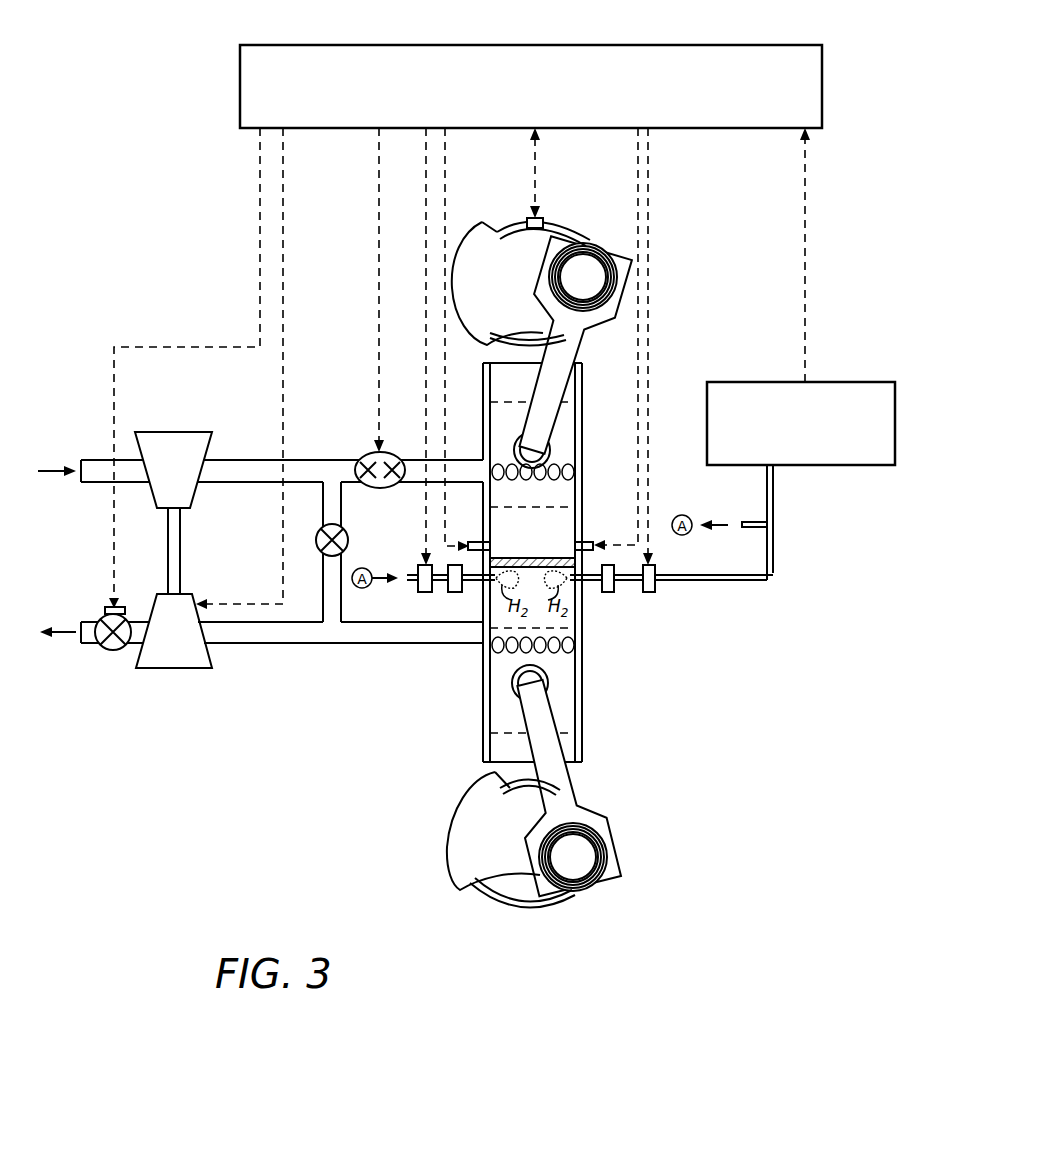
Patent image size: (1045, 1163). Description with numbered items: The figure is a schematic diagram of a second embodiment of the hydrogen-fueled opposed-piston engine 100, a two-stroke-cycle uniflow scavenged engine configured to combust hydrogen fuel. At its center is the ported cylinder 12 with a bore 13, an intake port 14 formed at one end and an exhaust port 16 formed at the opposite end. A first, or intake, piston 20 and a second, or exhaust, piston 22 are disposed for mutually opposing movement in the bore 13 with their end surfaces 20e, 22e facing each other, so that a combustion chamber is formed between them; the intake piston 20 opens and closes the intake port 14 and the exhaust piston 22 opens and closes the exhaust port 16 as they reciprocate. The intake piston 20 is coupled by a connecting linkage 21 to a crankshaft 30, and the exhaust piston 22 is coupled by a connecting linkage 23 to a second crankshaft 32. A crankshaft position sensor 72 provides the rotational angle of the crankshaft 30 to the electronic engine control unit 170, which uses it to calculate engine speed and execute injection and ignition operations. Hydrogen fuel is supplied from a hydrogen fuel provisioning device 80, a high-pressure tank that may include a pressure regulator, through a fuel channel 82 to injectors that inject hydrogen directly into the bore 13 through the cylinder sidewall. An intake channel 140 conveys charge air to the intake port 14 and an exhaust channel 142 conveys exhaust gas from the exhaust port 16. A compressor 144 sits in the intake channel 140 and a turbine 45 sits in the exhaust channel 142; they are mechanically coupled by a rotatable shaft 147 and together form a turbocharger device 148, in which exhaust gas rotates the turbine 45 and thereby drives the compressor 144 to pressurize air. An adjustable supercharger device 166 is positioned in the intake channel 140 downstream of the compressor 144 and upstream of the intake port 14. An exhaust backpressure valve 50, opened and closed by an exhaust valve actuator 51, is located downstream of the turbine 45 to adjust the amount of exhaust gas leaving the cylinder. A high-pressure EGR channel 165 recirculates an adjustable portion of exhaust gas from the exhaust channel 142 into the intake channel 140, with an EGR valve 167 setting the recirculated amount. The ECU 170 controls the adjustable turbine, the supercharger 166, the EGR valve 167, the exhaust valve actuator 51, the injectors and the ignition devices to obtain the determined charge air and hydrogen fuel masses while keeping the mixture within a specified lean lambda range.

The electronic engine control unit (ECU) 170 is at (705, 45).
The crankshaft position sensor 72 is at (540, 215).
The crankshaft 30 is at (575, 228).
The hydrogen-fueled opposed-piston engine 100 is at (855, 276).
The connecting linkage 21 is at (565, 345).
The ported cylinder 12 is at (580, 378).
The first piston (intake piston) 20 is at (568, 412).
The intake port 14 is at (582, 470).
The end surface of first piston 20e is at (560, 507).
The bore 13 is at (545, 545).
The end surface of second piston 22e is at (570, 620).
The exhaust port 16 is at (582, 648).
The second piston (exhaust piston) 22 is at (540, 722).
The connecting linkage 23 is at (570, 780).
The crankshaft 32 is at (527, 910).
The compressor 144 is at (195, 430).
The rotatable shaft 147 is at (180, 530).
The turbocharger device 148 is at (192, 554).
The turbine 45 is at (172, 670).
The exhaust backpressure valve 50 is at (113, 651).
The exhaust valve actuator 51 is at (104, 610).
The high-pressure EGR channel 165 is at (323, 562).
The adjustable supercharger device 166 is at (365, 453).
The EGR valve 167 is at (350, 538).
The intake channel 140 is at (458, 460).
The exhaust channel 142 is at (440, 645).
The hydrogen fuel provisioning device 80 is at (898, 420).
The fuel channel 82 is at (776, 478).